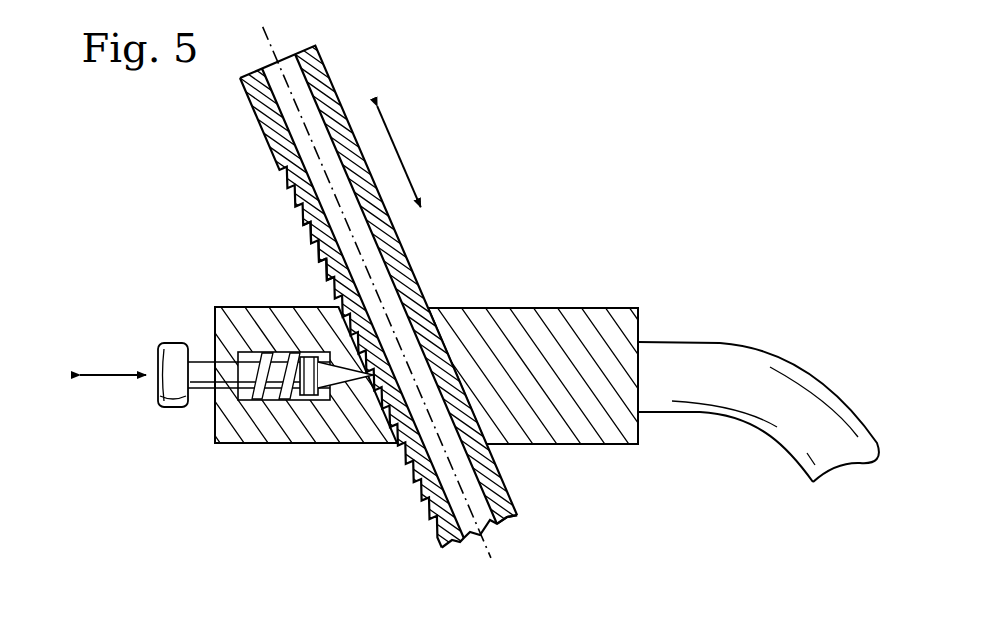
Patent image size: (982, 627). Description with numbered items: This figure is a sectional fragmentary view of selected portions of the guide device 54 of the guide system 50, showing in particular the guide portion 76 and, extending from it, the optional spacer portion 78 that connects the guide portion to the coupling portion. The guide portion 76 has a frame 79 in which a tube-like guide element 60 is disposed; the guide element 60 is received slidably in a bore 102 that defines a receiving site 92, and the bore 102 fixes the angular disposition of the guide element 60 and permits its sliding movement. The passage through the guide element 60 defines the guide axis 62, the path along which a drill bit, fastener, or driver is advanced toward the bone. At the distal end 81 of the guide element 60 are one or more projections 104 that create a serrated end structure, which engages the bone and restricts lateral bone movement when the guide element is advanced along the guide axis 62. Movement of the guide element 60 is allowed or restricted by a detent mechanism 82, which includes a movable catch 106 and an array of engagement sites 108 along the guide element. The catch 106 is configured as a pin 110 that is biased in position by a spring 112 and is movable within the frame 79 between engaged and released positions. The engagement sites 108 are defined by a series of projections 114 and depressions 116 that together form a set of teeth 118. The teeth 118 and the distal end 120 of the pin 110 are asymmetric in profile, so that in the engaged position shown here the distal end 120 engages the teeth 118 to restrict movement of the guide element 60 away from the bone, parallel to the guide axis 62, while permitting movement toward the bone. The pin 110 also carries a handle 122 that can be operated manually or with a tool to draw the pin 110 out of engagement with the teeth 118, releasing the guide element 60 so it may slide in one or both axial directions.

The guide system 50 is at (97, 175).
The guide device 54 is at (745, 329).
The guide element 60 is at (338, 93).
The guide axis 62 is at (493, 551).
The guide portion 76 is at (589, 306).
The spacer portion 78 is at (839, 387).
The frame 79 is at (262, 449).
The distal end 81 is at (471, 543).
The detent mechanism 82 is at (331, 339).
The receiving site 92 is at (430, 304).
The bore 102 is at (432, 344).
The projections 104 is at (498, 522).
The movable catch 106 is at (209, 359).
The engagement sites 108 is at (289, 196).
The pin 110 is at (205, 394).
The spring 112 is at (255, 401).
The projections 114 is at (301, 235).
The depressions 116 is at (321, 263).
The teeth 118 is at (305, 273).
The distal end 120 is at (357, 372).
The handle 122 is at (165, 359).